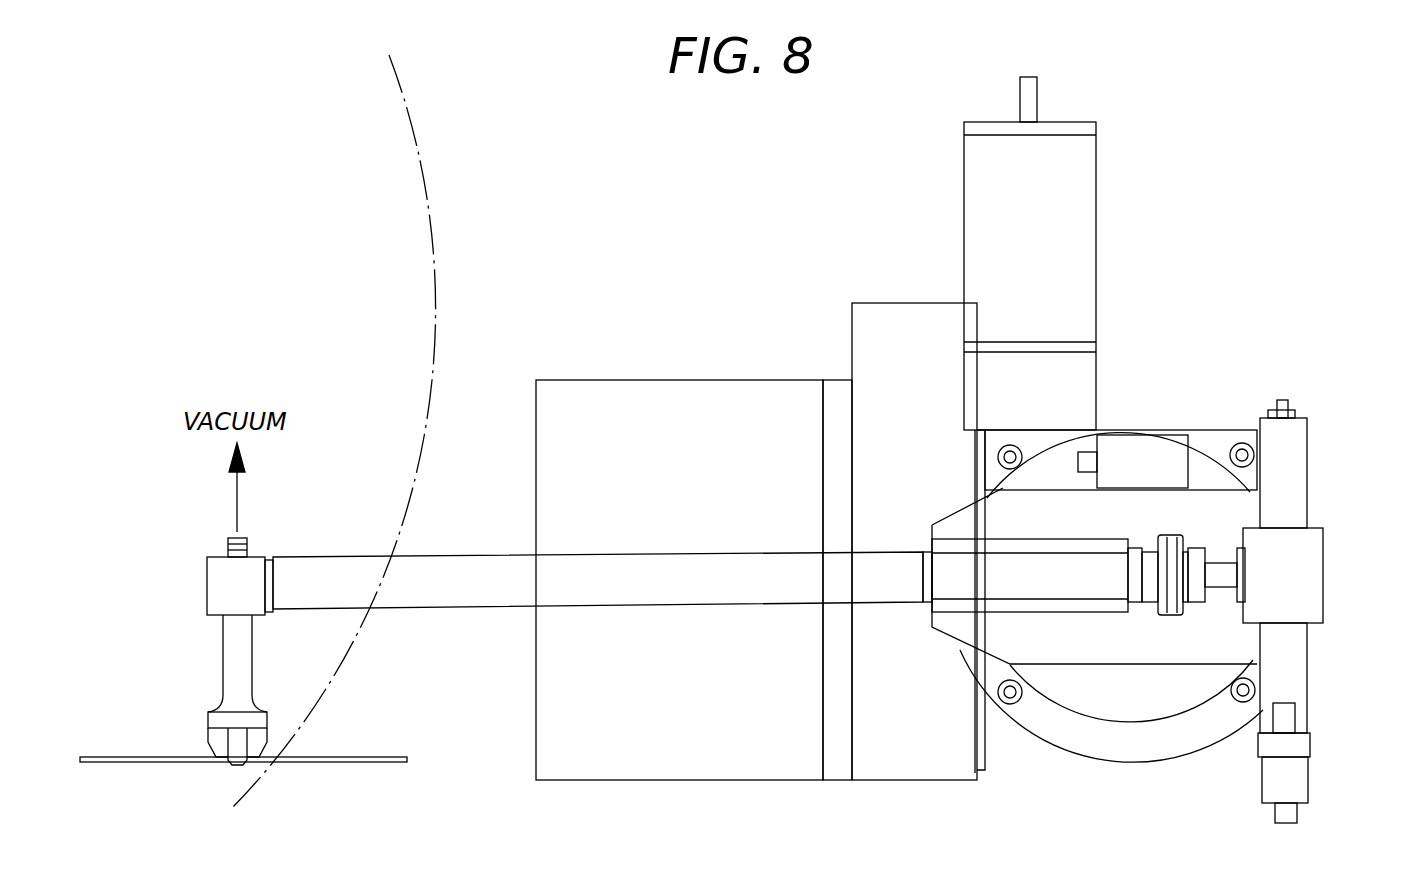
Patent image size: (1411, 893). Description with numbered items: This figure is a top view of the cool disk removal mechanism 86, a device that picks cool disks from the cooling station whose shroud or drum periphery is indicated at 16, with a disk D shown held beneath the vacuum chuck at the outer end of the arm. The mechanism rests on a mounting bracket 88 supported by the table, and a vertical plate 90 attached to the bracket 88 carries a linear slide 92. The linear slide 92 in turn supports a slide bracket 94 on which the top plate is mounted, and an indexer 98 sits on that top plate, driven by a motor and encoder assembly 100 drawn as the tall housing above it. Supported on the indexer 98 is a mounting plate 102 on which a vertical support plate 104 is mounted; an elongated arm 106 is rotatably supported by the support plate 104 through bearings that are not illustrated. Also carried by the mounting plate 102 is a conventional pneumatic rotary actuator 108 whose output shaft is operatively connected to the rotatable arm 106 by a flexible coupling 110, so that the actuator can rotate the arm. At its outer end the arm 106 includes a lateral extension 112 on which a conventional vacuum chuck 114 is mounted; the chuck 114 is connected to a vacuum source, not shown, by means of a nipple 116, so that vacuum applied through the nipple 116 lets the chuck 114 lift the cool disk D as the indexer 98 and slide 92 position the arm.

The drum periphery 16 is at (436, 232).
The disc D is at (347, 762).
The cool disk removal mechanism 86 is at (1058, 778).
The mounting bracket 88 is at (752, 750).
The vertical plate 90 is at (842, 780).
The linear slide 92 is at (908, 768).
The slide bracket 94 is at (987, 720).
The indexer 98 is at (1223, 437).
The motor and encoder assembly 100 is at (1055, 263).
The mounting plate 102 is at (1143, 485).
The vertical support plate 104 is at (970, 543).
The elongated arm 106 is at (683, 582).
The pneumatic rotary actuator 108 is at (1290, 571).
The flexible coupling 110 is at (1168, 617).
The lateral extension 112 is at (230, 650).
The vacuum chuck 114 is at (237, 733).
The nipple 116 is at (250, 543).